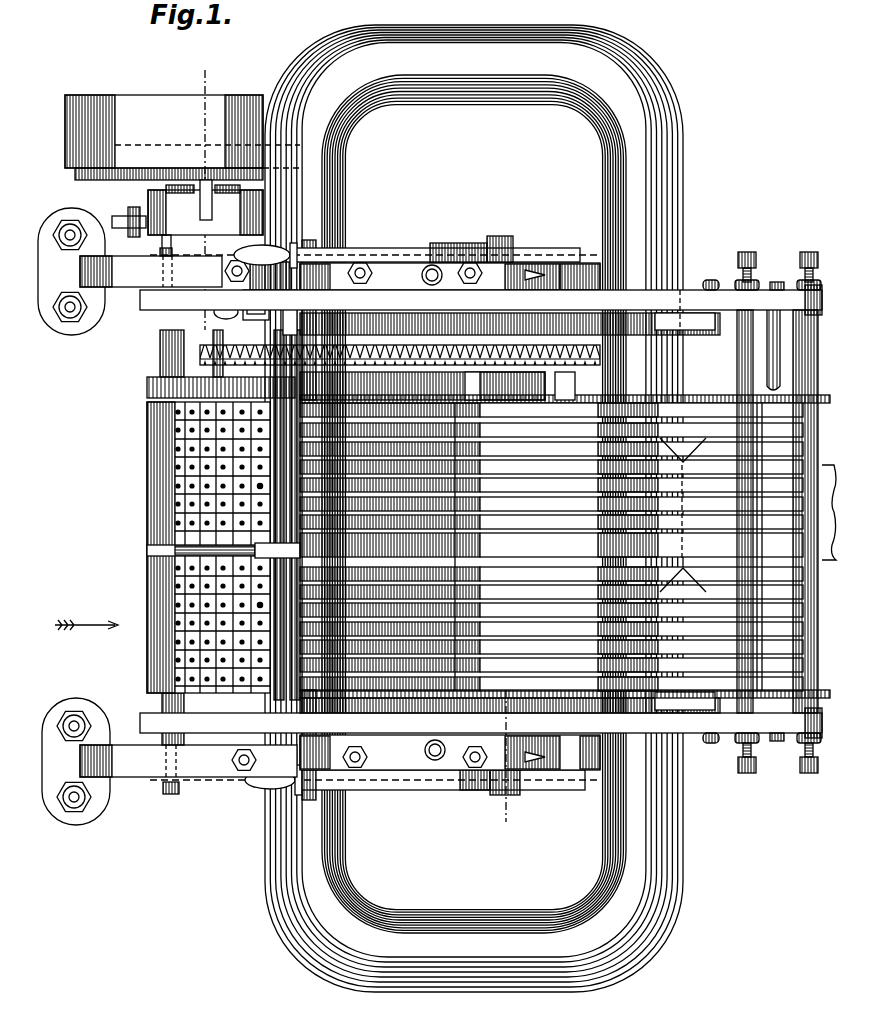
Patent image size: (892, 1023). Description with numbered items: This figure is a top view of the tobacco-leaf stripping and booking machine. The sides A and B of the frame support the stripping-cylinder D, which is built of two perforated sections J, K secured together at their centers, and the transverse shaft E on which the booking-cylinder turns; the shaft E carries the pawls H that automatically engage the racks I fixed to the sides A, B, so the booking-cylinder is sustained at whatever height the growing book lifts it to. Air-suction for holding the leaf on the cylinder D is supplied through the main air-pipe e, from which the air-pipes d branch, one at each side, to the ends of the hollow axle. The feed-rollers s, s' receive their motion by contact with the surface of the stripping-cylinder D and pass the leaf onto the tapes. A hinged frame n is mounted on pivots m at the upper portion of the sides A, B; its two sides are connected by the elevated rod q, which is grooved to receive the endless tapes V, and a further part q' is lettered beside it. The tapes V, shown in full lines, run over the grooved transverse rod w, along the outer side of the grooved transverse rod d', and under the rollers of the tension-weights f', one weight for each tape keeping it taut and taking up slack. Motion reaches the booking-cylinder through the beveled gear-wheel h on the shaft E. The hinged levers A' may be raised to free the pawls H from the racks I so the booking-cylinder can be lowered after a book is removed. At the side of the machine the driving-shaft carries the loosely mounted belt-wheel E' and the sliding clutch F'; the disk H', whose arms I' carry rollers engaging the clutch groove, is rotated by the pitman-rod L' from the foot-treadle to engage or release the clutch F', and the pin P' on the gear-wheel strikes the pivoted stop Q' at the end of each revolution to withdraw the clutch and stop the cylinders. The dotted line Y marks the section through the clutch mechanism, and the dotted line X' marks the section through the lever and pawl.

The air-pipe d is at (474, 508).
The belt-wheel E' is at (182, 131).
The sliding clutch F' is at (169, 184).
The section line Y Y is at (204, 191).
The disk H' is at (374, 497).
The arms I' is at (212, 203).
The pitman-rod L' is at (121, 217).
The side of frame A is at (151, 267).
The side of frame B is at (188, 769).
The stripping-cylinder D is at (40, 560).
The section of stripping-cylinder J is at (37, 548).
The section of stripping-cylinder K is at (38, 553).
The feed-roller s is at (263, 487).
The feed-roller s' is at (261, 611).
The stop Q' is at (241, 305).
The pin P' is at (283, 312).
The rod q is at (209, 353).
The gear wheel q' is at (400, 357).
The hinged lever A' is at (375, 247).
The pawl H is at (450, 517).
The hinged frame n is at (481, 511).
The transverse shaft E is at (565, 387).
The beveled gear-wheel h is at (565, 384).
The endless tapes V is at (565, 550).
The grooved transverse rod w is at (748, 511).
The grooved transverse rod d' is at (816, 511).
The tension-weight f' is at (774, 357).
The main air-pipe e is at (829, 521).
The pivot m is at (760, 512).
The rack I is at (450, 752).
The section line X X X' is at (503, 758).